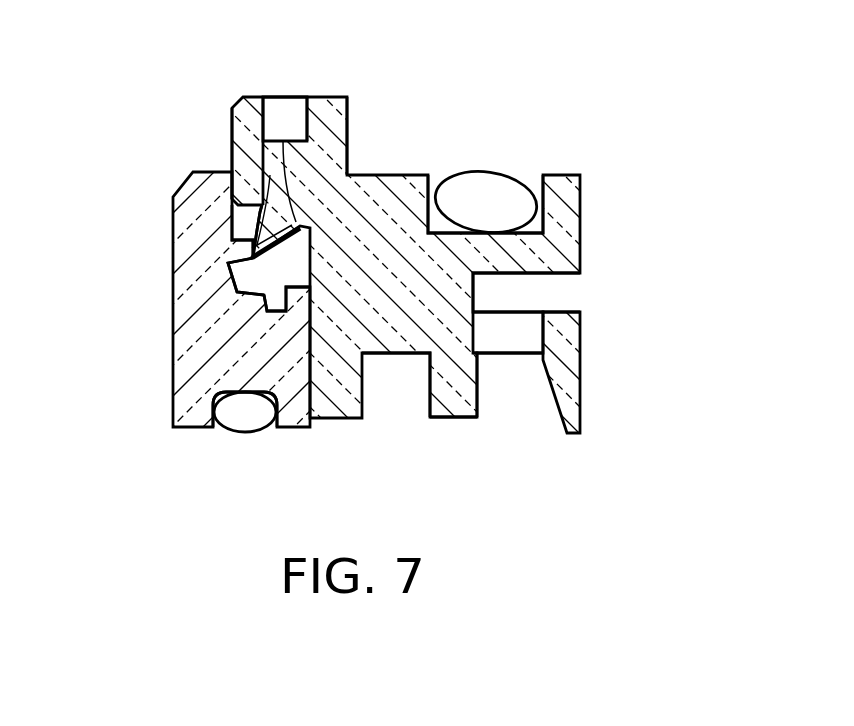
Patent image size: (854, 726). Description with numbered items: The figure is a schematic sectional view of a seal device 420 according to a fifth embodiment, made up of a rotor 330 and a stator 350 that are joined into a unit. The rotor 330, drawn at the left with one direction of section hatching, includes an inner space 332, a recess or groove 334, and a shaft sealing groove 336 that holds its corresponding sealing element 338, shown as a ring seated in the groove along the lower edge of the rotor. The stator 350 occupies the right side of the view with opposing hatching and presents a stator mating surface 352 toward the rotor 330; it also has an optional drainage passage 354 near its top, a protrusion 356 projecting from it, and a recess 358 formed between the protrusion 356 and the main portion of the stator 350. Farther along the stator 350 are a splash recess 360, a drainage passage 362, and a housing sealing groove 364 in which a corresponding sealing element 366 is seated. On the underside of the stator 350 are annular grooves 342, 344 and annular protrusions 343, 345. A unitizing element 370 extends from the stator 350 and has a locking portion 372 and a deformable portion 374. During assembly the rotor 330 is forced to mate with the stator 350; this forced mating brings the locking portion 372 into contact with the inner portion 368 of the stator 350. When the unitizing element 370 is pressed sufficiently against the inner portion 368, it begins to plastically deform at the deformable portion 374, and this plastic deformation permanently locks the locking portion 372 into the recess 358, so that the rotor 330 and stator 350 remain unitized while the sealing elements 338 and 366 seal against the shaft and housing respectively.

The seal device 420 is at (660, 88).
The rotor 330 is at (175, 207).
The inner space 332 is at (268, 273).
The recess or groove 334 is at (265, 303).
The shaft sealing groove 336 is at (222, 395).
The sealing element 338 is at (245, 413).
The annular groove 342 is at (393, 373).
The annular protrusion 343 is at (460, 417).
The annular groove 344 is at (513, 373).
The annular protrusion 345 is at (573, 403).
The stator 350 is at (390, 220).
The stator mating surface 352 is at (347, 157).
The drainage passage 354 is at (290, 107).
The protrusion 356 is at (258, 135).
The recess 358 is at (290, 155).
The splash recess 360 is at (552, 291).
The drainage passage 362 is at (520, 332).
The housing sealing groove 364 is at (537, 228).
The sealing element 366 is at (488, 183).
The inner portion 368 is at (300, 228).
The unitizing element 370 is at (253, 240).
The locking portion 372 is at (287, 187).
The deformable portion 374 is at (255, 250).